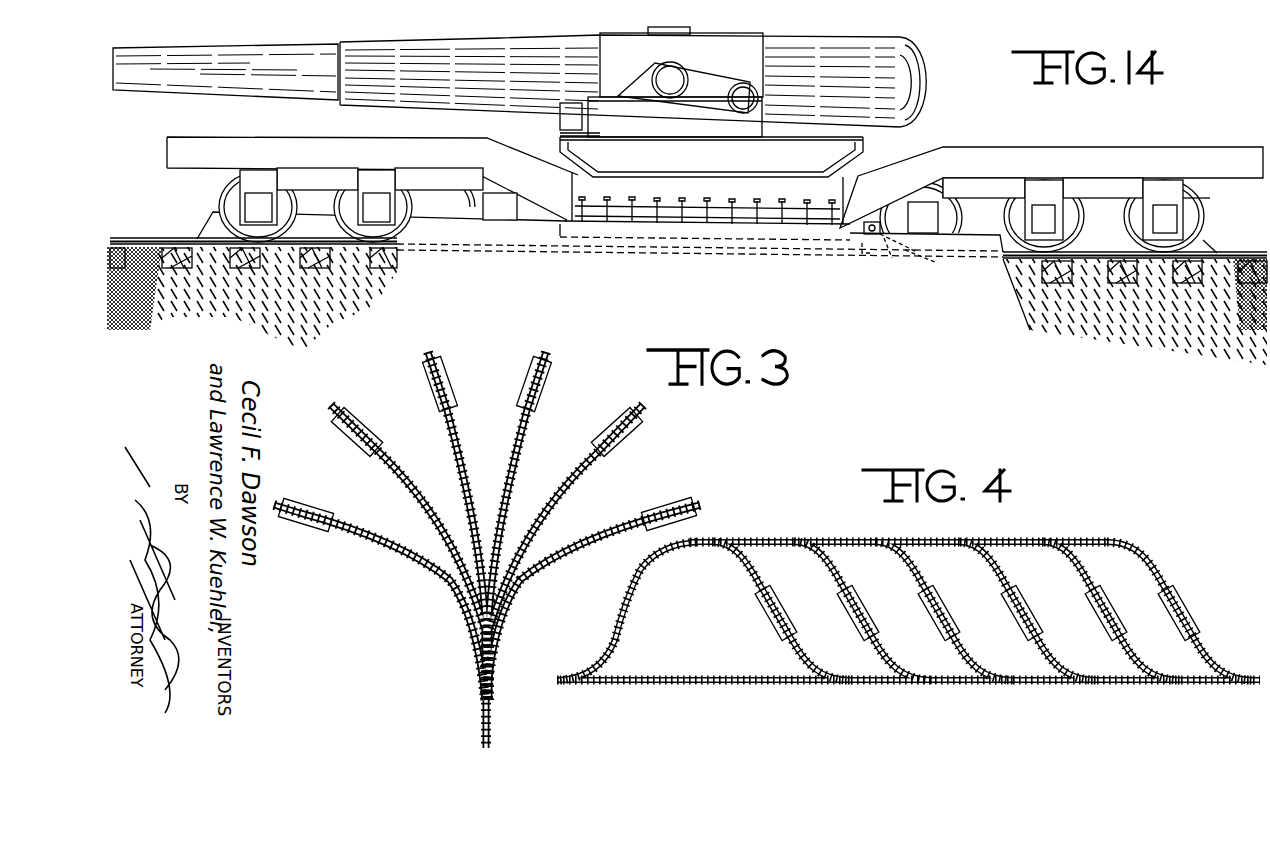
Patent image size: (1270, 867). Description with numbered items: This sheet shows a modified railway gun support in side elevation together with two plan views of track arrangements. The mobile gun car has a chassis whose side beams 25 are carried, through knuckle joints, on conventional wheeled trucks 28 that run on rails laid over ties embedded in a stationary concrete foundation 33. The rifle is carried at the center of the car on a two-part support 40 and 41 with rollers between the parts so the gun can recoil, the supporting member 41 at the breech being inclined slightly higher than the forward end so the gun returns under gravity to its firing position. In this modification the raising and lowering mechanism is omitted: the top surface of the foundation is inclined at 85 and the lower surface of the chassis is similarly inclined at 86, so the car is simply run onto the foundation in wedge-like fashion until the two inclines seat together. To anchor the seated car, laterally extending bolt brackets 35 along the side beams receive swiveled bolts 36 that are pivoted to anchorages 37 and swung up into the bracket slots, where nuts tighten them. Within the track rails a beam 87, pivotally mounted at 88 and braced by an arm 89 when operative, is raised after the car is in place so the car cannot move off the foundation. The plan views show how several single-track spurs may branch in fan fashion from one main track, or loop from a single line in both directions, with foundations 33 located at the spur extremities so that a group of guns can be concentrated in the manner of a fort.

In FIG. 14, the side beams 25 is at (1022, 158).
In FIG. 14, the trucks 28 is at (1167, 200).
In FIG. 14, the stationary foundation 33 is at (1102, 323).
In FIG. 3, the stationary foundation 33 is at (528, 378).
In FIG. 4, the stationary foundation 33 is at (854, 613).
In FIG. 14, the bolt brackets 35 is at (707, 198).
In FIG. 14, the swiveled bolts 36 is at (830, 220).
In FIG. 14, the anchorages 37 is at (740, 232).
In FIG. 14, the two-part support (upper part) 40 is at (661, 82).
In FIG. 14, the supporting member 41 is at (711, 157).
In FIG. 14, the inclined top surface of the supporting foundation 85 is at (440, 214).
In FIG. 14, the inclined lower surface of the chassis 86 is at (648, 226).
In FIG. 14, the beam 87 is at (866, 235).
In FIG. 14, the pivot 88 is at (887, 260).
In FIG. 14, the arm 89 is at (932, 262).